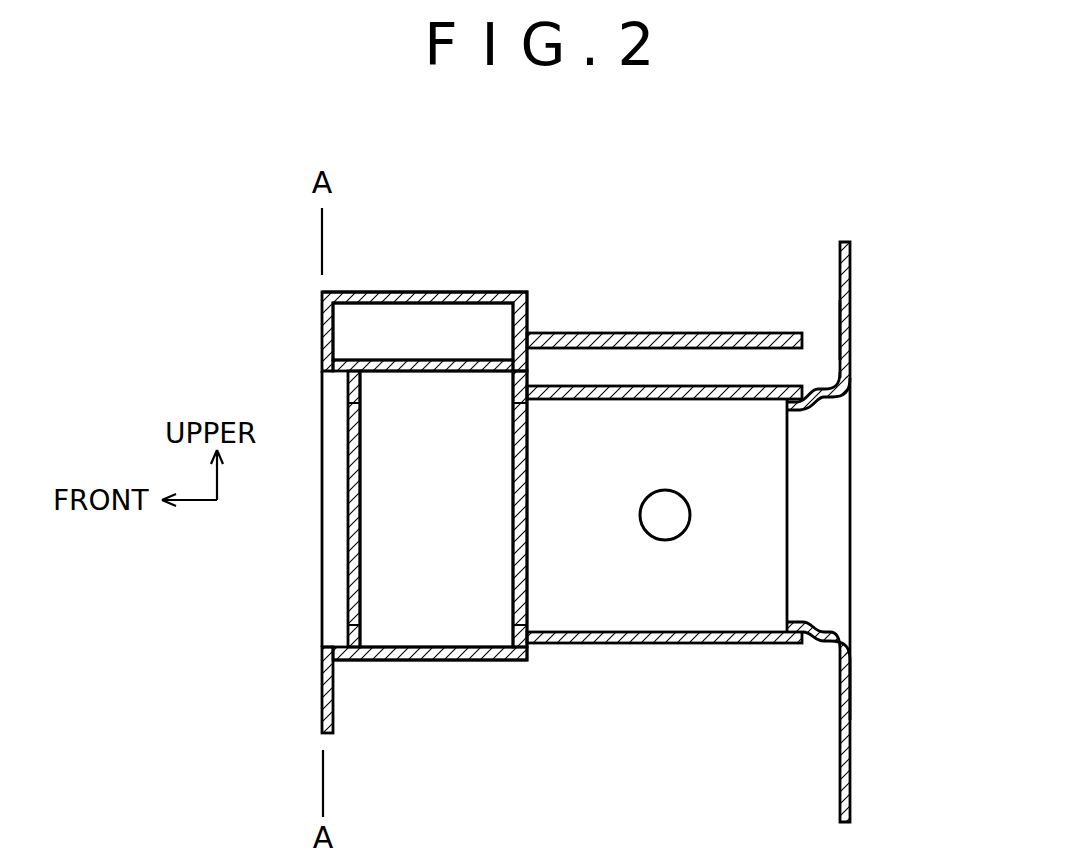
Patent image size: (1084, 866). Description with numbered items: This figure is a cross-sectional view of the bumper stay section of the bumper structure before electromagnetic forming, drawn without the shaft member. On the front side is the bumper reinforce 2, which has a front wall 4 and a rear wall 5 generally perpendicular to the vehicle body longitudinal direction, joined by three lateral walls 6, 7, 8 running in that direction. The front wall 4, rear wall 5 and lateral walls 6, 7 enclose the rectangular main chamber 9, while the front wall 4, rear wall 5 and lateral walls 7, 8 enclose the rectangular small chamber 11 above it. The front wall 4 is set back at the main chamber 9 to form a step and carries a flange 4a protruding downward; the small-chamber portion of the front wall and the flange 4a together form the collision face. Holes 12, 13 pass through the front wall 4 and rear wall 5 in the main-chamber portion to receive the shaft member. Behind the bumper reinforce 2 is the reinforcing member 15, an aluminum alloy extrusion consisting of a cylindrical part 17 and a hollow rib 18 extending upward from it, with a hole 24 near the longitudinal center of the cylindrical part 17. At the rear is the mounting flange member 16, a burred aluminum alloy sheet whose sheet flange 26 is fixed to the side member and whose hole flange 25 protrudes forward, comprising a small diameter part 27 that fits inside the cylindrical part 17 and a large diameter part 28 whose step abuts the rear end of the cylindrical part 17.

The bumper reinforce 2 is at (443, 246).
The front wall 4 is at (347, 381).
The flange 4a is at (324, 700).
The rear wall 5 is at (523, 382).
The lateral wall 6 is at (443, 660).
The lateral wall 7 is at (425, 367).
The lateral wall 8 is at (407, 292).
The main chamber 9 is at (480, 612).
The small chamber 11 is at (478, 320).
The hole 12 is at (355, 462).
The hole 13 is at (528, 467).
The reinforcing member 15 is at (669, 311).
The mounting flange member 16 is at (858, 224).
The cylindrical part 17 is at (650, 645).
The hollow rib 18 is at (753, 319).
The hole 24 is at (662, 497).
The hole flange 25 is at (830, 427).
The sheet flange 26 is at (848, 318).
The small diameter part 27 is at (795, 621).
The large diameter part 28 is at (845, 628).